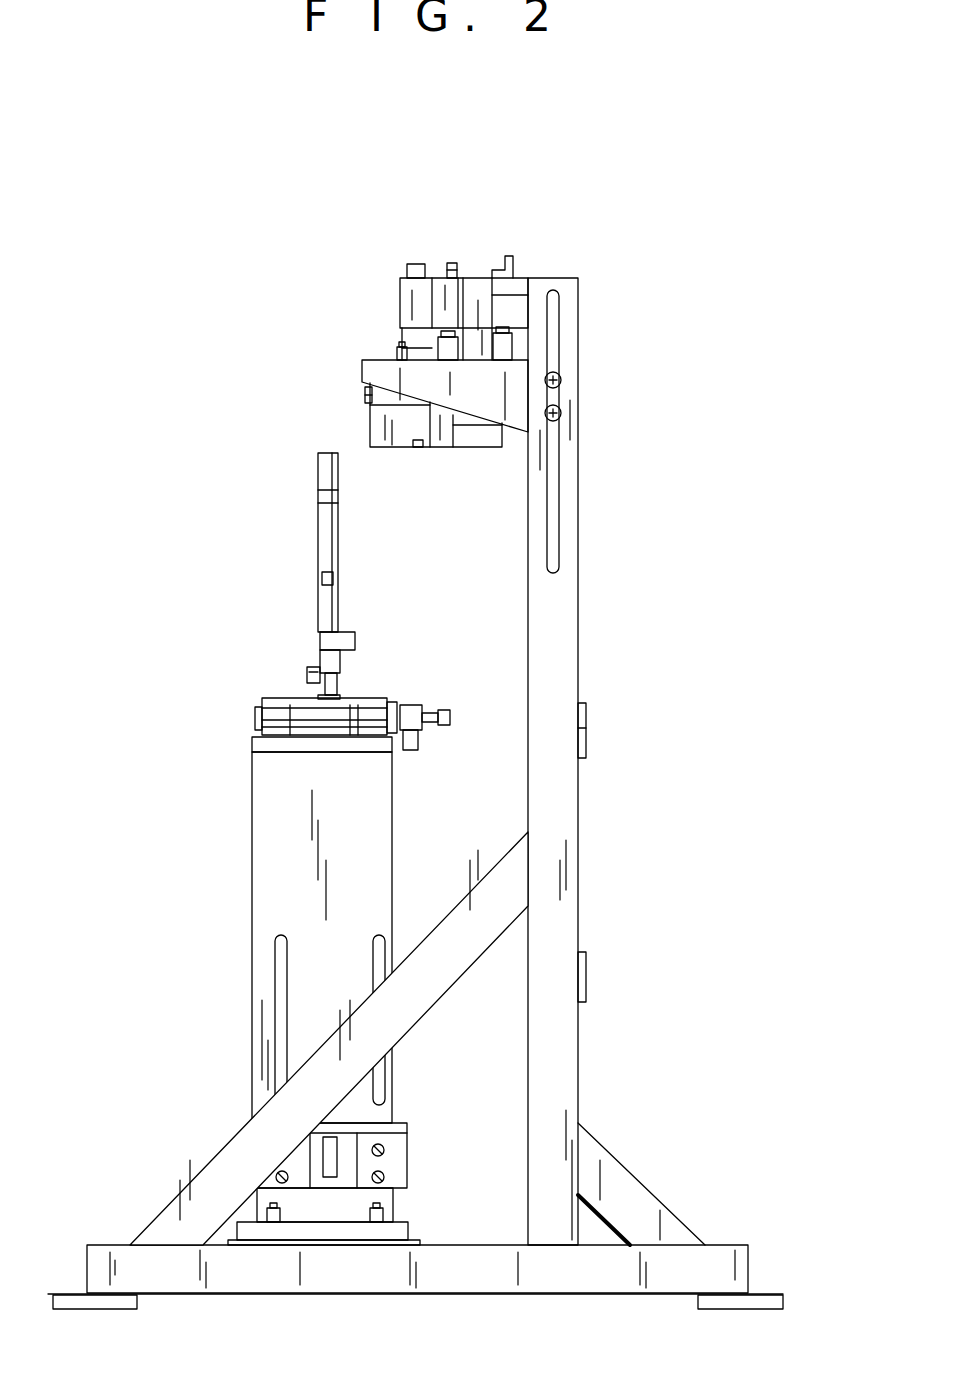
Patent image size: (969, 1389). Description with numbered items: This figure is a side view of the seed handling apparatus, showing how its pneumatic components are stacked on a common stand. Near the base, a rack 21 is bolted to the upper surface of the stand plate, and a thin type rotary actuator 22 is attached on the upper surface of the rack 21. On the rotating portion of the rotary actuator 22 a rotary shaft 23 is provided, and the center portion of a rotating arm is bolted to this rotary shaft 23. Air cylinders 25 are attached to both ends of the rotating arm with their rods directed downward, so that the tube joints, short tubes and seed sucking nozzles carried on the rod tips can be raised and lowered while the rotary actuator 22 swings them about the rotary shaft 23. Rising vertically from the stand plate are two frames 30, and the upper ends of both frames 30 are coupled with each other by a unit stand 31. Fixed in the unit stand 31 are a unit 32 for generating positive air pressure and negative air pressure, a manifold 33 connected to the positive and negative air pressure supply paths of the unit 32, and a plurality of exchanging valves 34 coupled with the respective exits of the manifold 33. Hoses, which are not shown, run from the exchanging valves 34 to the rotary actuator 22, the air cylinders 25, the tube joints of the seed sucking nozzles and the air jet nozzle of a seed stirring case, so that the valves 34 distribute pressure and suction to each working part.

The rack 21 is at (265, 882).
The rotary actuator 22 is at (272, 720).
The rotary shaft 23 is at (307, 670).
The air cylinder 25 is at (325, 558).
The frame 30 is at (569, 885).
The unit stand 31 is at (383, 365).
The unit for generating positive air pressure and negative air pressure 32 is at (410, 290).
The manifold 33 is at (377, 397).
The exchanging valve 34 is at (378, 425).